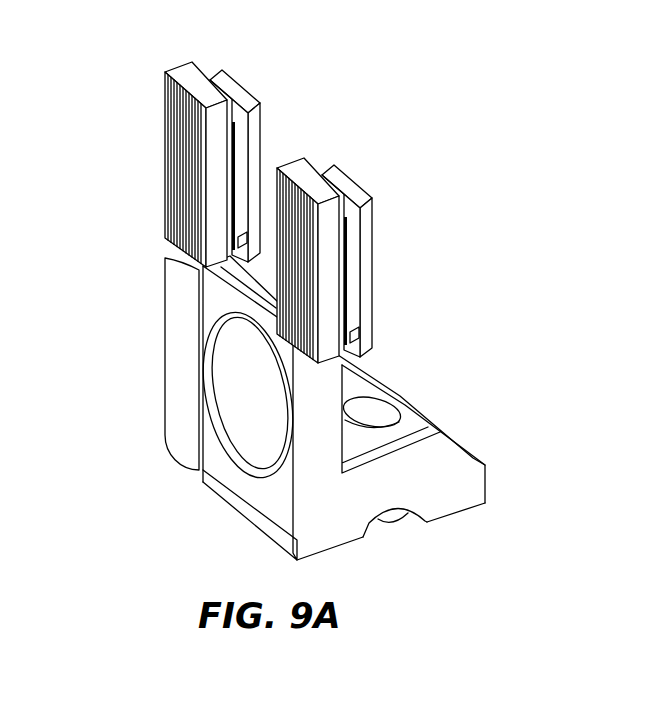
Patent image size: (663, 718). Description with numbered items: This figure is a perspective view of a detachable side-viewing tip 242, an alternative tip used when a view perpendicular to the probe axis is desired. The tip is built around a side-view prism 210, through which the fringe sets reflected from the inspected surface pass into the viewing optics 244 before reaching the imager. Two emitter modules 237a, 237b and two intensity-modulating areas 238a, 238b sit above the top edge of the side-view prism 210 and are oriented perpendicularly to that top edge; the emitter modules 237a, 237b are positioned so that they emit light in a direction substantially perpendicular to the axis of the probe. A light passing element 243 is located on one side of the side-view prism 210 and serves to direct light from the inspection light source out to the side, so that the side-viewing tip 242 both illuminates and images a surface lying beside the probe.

The detachable side-viewing tip 242 is at (524, 100).
The intensity-modulating area 238a is at (193, 62).
The emitter module 237a is at (240, 88).
The intensity-modulating area 238b is at (303, 158).
The emitter module 237b is at (358, 197).
The light passing element 243 is at (165, 352).
The side-view prism 210 is at (365, 363).
The viewing optics 244 is at (392, 515).